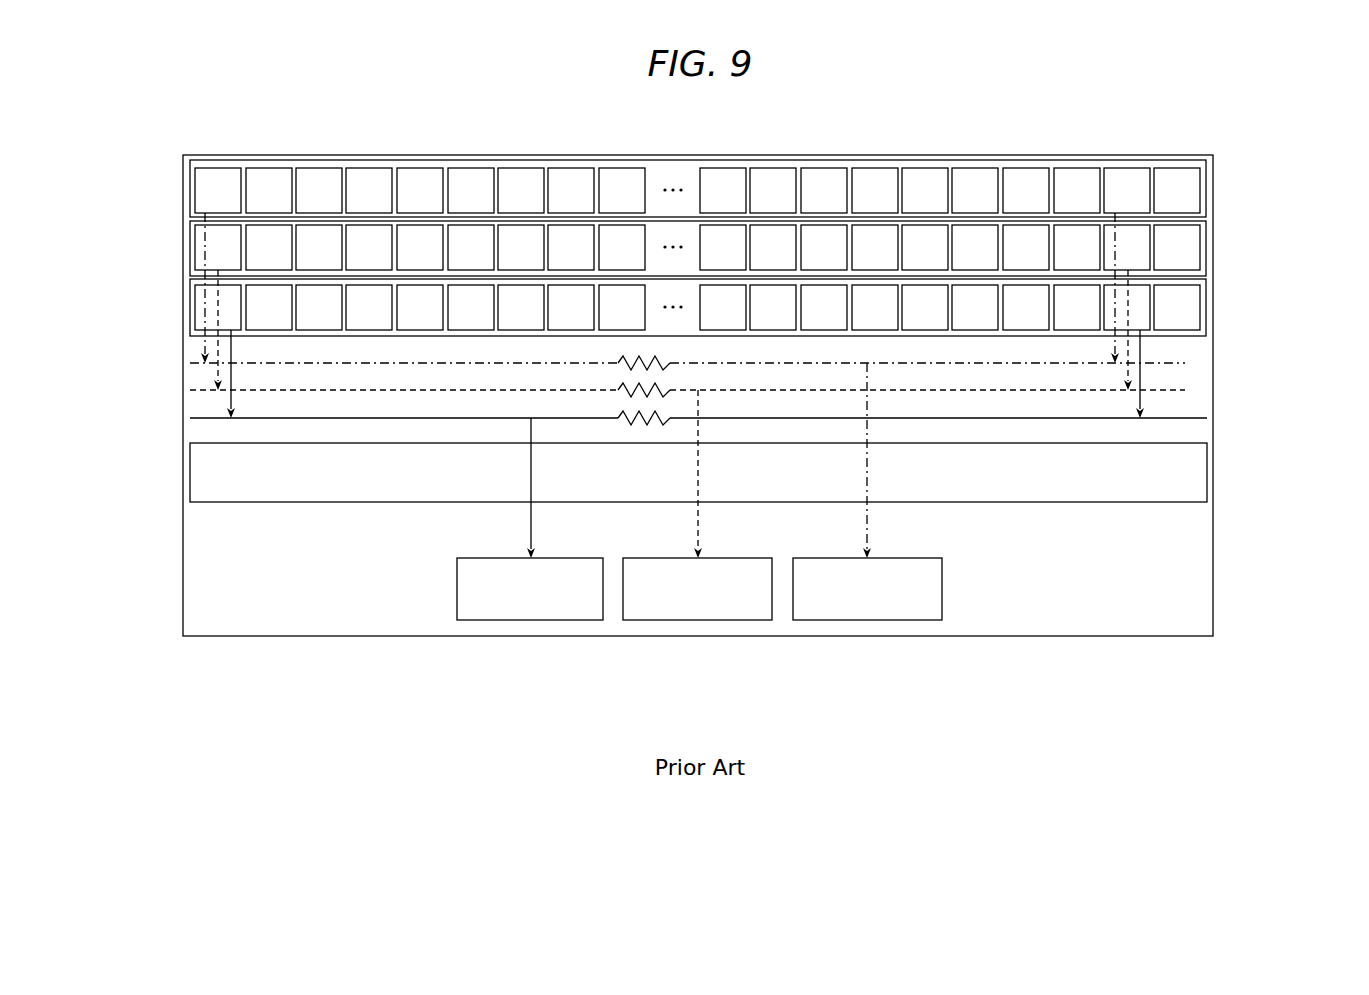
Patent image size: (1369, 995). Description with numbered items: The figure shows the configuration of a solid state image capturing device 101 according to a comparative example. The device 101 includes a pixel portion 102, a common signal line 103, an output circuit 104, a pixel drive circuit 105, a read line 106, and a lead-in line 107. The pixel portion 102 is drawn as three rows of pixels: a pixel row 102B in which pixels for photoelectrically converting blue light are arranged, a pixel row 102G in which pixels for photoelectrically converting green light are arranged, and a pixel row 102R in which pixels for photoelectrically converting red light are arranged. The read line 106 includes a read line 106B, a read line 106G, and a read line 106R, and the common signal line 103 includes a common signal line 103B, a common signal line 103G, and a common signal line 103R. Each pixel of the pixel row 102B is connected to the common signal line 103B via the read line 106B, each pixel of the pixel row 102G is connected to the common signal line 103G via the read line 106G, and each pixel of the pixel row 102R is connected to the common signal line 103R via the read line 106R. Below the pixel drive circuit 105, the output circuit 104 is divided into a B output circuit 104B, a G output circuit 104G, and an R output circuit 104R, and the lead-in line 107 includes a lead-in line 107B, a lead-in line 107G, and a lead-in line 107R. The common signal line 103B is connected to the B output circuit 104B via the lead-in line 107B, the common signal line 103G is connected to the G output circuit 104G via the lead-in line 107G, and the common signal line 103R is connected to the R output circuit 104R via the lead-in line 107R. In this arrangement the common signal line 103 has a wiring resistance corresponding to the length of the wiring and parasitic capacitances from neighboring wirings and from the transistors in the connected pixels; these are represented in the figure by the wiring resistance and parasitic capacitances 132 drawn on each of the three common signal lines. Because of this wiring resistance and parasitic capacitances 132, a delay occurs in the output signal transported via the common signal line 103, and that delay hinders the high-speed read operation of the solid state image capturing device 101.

The solid state image capturing device 101 is at (694, 154).
The pixel portion 102 is at (759, 248).
The pixel row 102B is at (1206, 190).
The pixel row 102G is at (1206, 247).
The pixel row 102R is at (733, 307).
The common signal line 103 is at (764, 385).
The common signal line 103B is at (1185, 365).
The common signal line 103G is at (1185, 392).
The common signal line 103R is at (741, 415).
The output circuit 104 is at (699, 639).
The R output circuit 104R is at (531, 621).
The G output circuit 104G is at (698, 621).
The B output circuit 104B is at (867, 619).
The pixel drive circuit 105 is at (1213, 466).
The read line 106 is at (603, 313).
The read line 106B is at (205, 217).
The read line 106G is at (207, 270).
The read line 106R is at (627, 363).
The lead-in line 107 is at (767, 460).
The lead-in line 107R is at (531, 528).
The lead-in line 107G is at (697, 526).
The lead-in line 107B is at (867, 527).
The wiring resistance and parasitic capacitances 132 is at (611, 428).